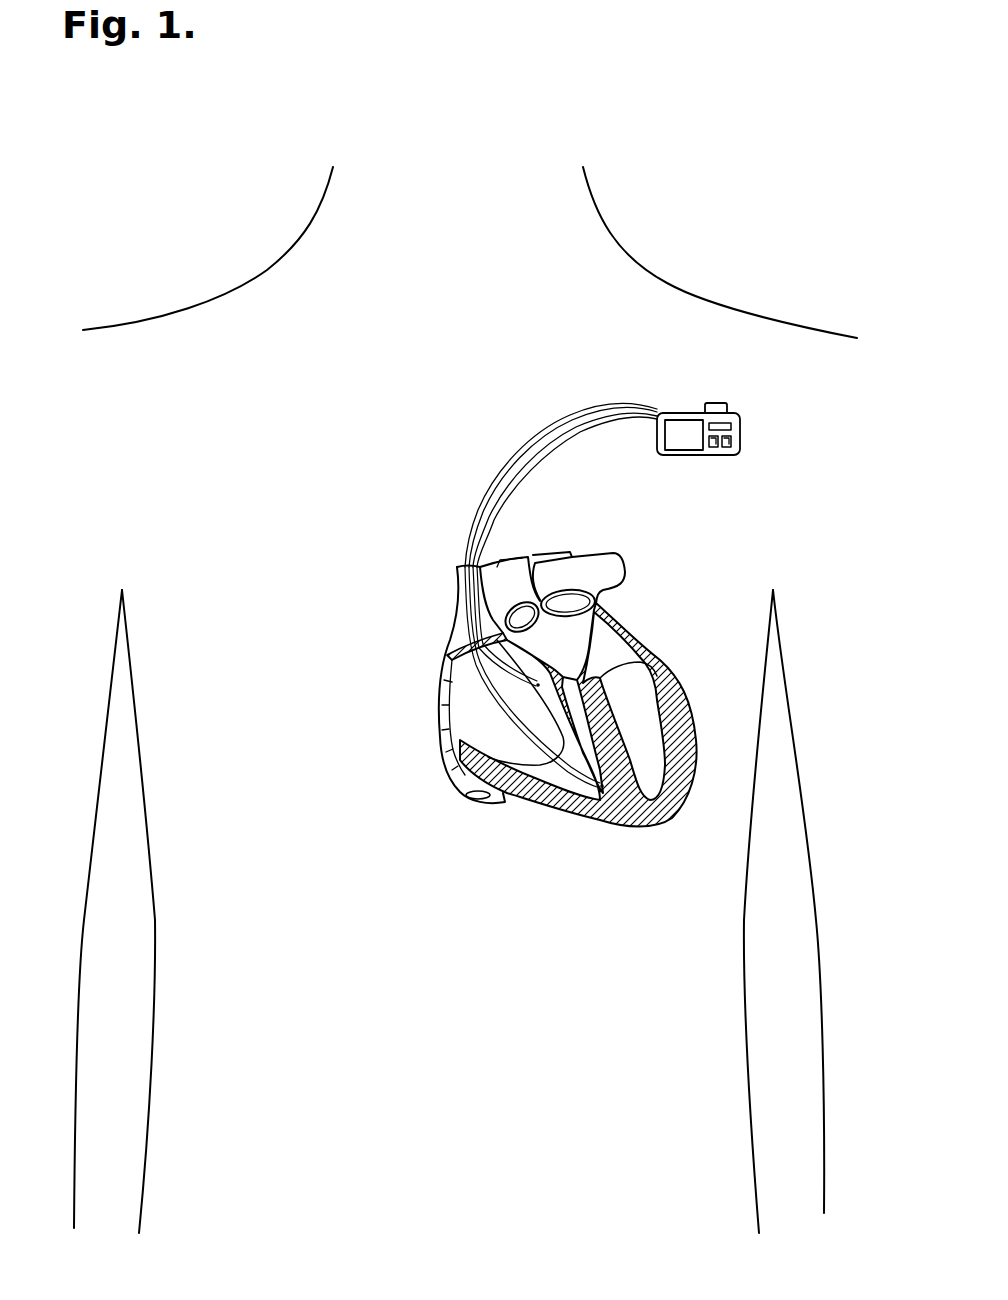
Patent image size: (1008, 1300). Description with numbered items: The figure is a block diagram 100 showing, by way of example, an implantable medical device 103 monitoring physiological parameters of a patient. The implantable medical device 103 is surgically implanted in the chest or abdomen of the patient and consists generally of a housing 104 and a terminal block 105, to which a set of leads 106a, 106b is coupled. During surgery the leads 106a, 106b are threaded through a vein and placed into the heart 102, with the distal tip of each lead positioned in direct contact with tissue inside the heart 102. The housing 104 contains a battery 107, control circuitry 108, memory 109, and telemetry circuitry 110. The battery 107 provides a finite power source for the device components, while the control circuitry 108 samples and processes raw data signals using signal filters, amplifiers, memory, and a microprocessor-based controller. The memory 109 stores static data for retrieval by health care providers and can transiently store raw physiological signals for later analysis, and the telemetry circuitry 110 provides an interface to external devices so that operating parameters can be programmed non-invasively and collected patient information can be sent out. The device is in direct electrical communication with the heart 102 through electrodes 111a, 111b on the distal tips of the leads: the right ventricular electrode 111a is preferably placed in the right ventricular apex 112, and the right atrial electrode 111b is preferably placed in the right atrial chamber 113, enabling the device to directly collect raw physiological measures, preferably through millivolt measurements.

The block diagram 100 is at (197, 226).
The heart 102 is at (437, 659).
The implantable medical device 103 is at (702, 433).
The housing 104 is at (743, 437).
The terminal block 105 is at (727, 404).
The lead 106a is at (530, 435).
The lead 106b is at (540, 458).
The battery 107 is at (688, 448).
The control circuitry 108 is at (713, 450).
The memory 109 is at (727, 447).
The telemetry circuitry 110 is at (735, 427).
The right ventricular electrode 111a is at (599, 791).
The right atrial electrode 111b is at (537, 692).
The right ventricular apex 112 is at (571, 794).
The right atrial chamber 113 is at (475, 700).